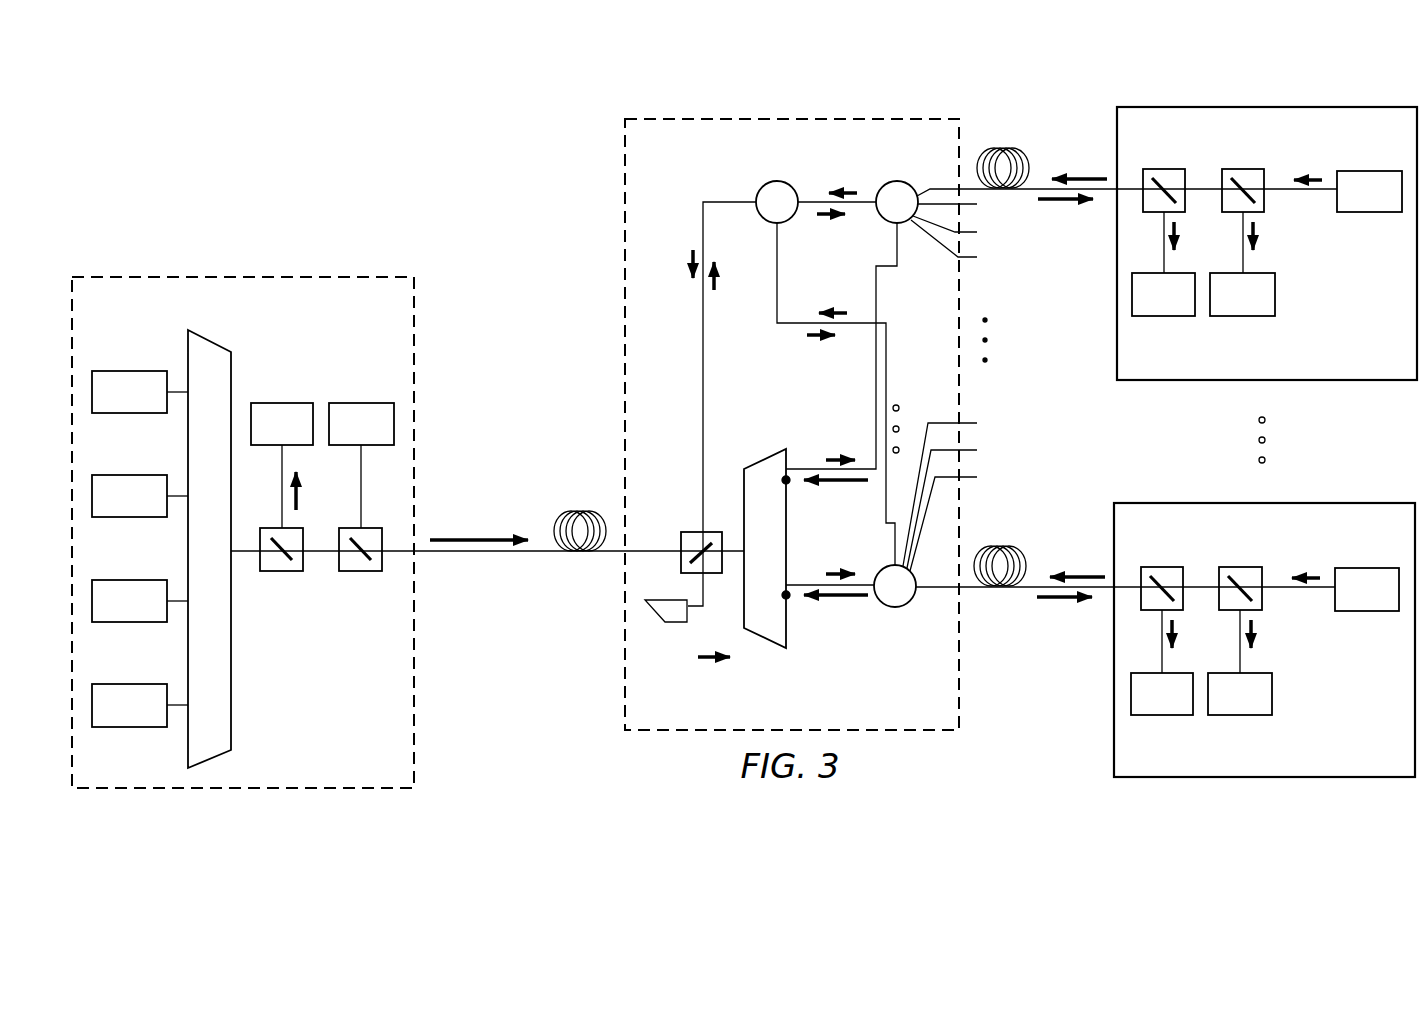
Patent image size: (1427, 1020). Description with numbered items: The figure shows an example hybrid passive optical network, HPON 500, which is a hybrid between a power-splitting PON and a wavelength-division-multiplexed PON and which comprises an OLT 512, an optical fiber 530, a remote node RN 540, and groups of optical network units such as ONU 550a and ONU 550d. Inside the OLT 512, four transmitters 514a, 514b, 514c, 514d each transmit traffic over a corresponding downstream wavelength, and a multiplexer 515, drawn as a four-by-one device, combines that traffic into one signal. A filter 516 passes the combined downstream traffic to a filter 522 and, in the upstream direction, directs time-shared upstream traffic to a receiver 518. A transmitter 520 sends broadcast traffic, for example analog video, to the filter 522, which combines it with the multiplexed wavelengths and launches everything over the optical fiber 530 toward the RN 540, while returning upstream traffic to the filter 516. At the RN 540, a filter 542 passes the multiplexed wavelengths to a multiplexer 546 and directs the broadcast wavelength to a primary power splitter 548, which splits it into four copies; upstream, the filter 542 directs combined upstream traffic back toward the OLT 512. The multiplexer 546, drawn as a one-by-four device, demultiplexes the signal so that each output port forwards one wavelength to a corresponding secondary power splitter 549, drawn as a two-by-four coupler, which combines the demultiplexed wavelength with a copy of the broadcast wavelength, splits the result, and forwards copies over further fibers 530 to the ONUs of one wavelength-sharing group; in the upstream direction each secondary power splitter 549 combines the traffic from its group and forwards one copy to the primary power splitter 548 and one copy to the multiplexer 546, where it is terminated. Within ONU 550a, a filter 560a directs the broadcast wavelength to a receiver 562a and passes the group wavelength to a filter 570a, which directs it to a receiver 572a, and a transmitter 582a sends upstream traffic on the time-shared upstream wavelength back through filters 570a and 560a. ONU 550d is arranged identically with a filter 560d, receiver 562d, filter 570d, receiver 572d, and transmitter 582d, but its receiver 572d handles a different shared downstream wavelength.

The HPON 500 is at (364, 126).
The OLT 512 is at (176, 274).
The transmitter 514a is at (128, 370).
The transmitter 514b is at (128, 474).
The transmitter 514c is at (128, 623).
The transmitter 514d is at (128, 728).
The multiplexer 515 is at (210, 337).
The filter 516 is at (290, 572).
The receiver 518 is at (286, 403).
The transmitter 520 is at (367, 403).
The filter 522 is at (367, 572).
The optical fiber 530 is at (577, 510).
The RN 540 is at (846, 115).
The filter 542 is at (692, 532).
The multiplexer 546 is at (765, 458).
The primary power splitter 548 is at (770, 182).
The secondary power splitter 549 is at (890, 182).
The ONU 550a is at (1300, 104).
The ONU 550d is at (1295, 781).
The filter 560a is at (1165, 169).
The filter 560d is at (1163, 567).
The receiver 562a is at (1175, 316).
The receiver 562d is at (1168, 715).
The filter 570a is at (1243, 169).
The filter 570d is at (1242, 567).
The receiver 572a is at (1253, 316).
The receiver 572d is at (1250, 715).
The transmitter 582a is at (1370, 212).
The transmitter 582d is at (1368, 611).